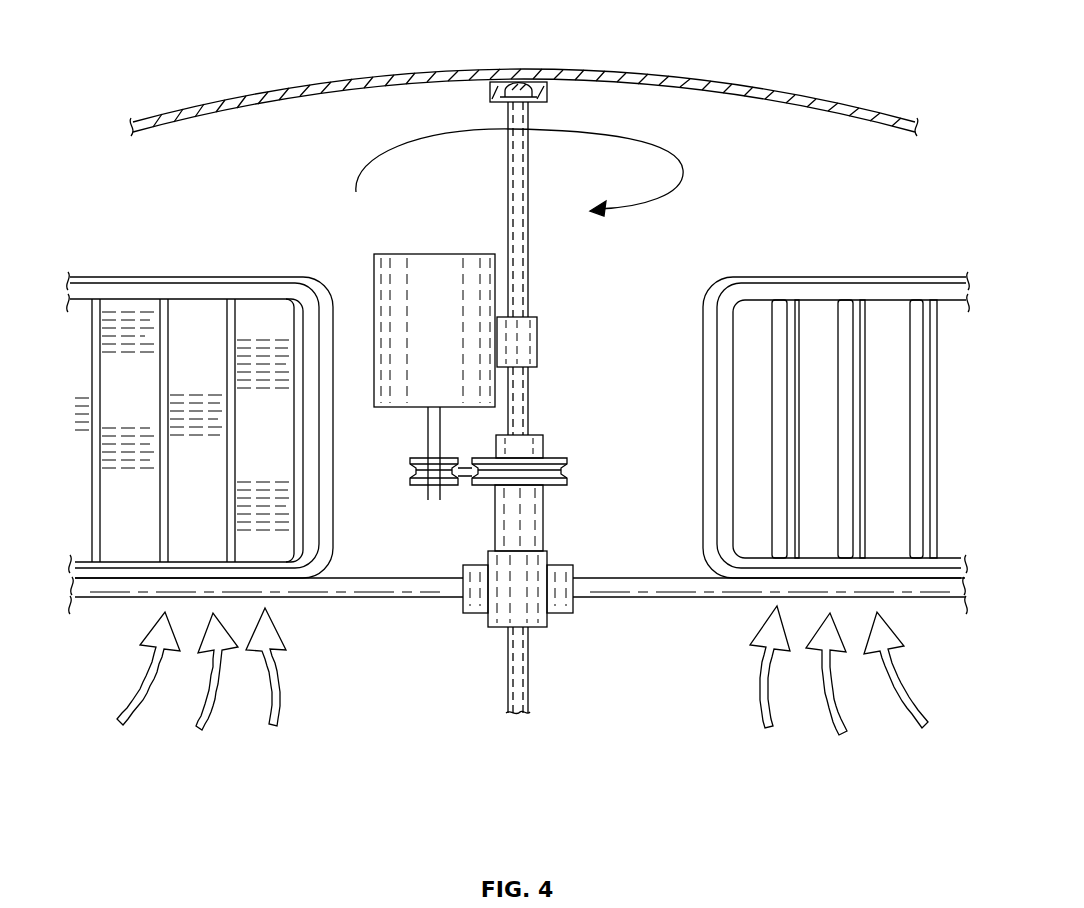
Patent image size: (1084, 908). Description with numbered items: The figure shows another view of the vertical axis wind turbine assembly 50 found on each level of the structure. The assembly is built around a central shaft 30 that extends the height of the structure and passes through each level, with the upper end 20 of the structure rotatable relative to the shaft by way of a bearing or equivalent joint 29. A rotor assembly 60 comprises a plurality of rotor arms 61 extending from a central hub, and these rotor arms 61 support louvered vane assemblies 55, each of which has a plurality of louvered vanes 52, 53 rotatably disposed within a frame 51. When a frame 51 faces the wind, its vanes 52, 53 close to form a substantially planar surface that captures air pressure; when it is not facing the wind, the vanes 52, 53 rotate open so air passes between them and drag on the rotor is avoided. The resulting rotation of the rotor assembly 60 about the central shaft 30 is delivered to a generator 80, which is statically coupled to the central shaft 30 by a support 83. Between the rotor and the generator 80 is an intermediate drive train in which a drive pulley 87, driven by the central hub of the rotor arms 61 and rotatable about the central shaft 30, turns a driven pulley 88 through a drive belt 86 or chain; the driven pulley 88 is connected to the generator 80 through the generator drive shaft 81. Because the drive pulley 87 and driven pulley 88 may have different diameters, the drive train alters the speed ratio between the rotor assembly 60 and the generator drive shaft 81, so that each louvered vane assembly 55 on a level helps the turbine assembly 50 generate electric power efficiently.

The upper end of the structure 20 is at (662, 70).
The upper shaft mount 29 is at (562, 101).
The central shaft 30 is at (530, 250).
The vertical axis wind turbine assembly 50 is at (511, 363).
The frame 51 is at (264, 290).
The louvered vanes 52 is at (128, 315).
The panel slat 53 is at (172, 325).
The screen panel 55 is at (518, 377).
The rotor assembly 60 is at (102, 625).
The rotor arms 61 is at (345, 598).
The generator 80 is at (437, 278).
The generator drive shaft 81 is at (428, 440).
The support 83 is at (525, 340).
The drive belt 86 is at (475, 462).
The drive pulley 87 is at (476, 497).
The driven pulley 88 is at (412, 478).